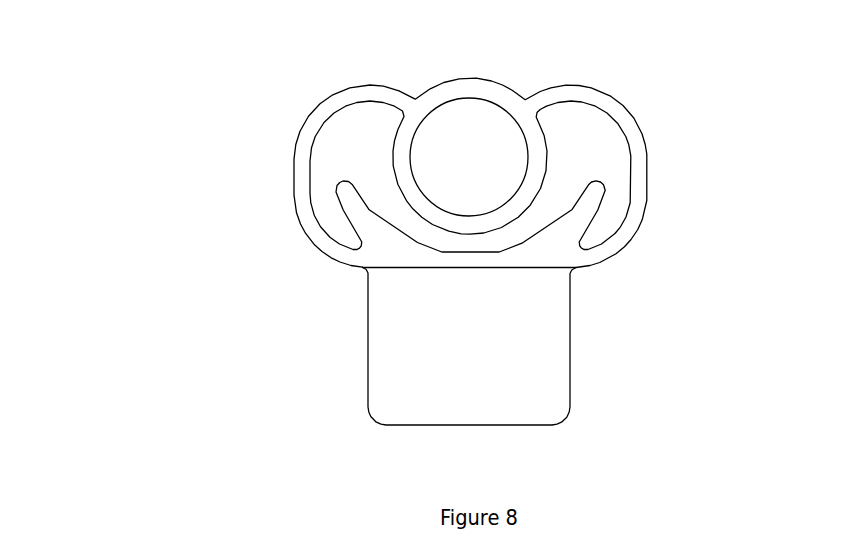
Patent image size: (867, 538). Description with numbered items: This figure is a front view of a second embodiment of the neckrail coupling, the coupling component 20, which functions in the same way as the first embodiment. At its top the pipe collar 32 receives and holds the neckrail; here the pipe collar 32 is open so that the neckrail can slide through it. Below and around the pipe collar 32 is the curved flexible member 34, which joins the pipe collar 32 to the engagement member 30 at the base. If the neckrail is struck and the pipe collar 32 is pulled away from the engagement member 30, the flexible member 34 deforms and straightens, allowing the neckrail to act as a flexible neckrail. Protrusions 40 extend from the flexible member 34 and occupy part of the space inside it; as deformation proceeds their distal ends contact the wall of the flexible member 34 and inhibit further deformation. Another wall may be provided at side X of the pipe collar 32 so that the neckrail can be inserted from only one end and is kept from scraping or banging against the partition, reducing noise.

The coupling component 20 is at (133, 120).
The engagement member 30 is at (550, 390).
The pipe collar 32 is at (415, 102).
The flexible member 34 is at (633, 143).
The protrusions 40 is at (593, 190).
The side X is at (477, 142).